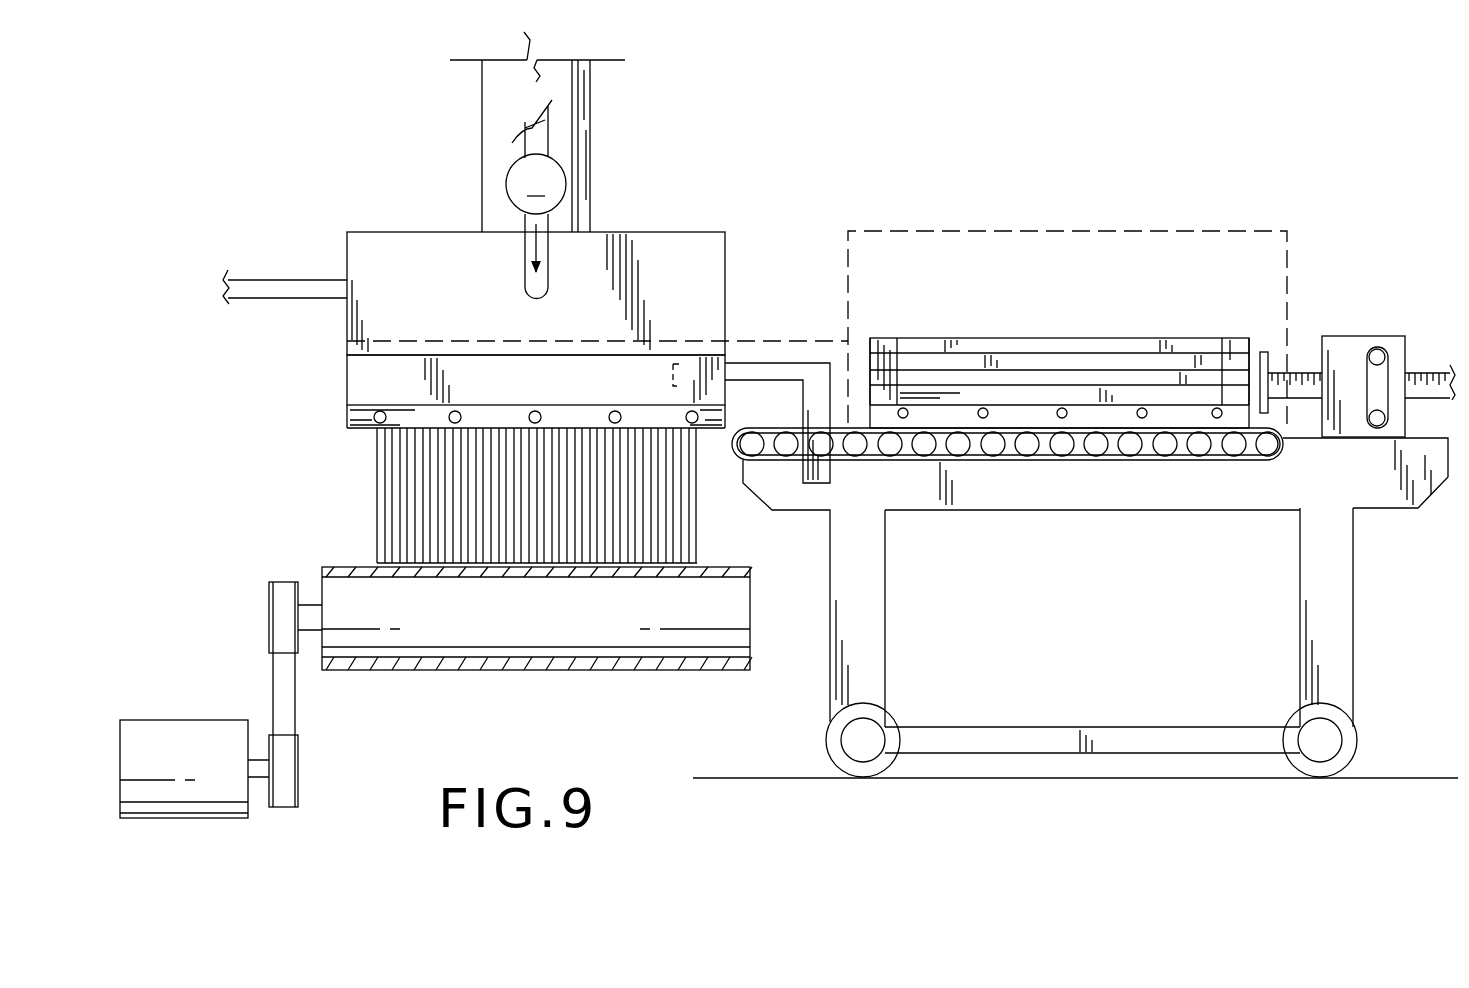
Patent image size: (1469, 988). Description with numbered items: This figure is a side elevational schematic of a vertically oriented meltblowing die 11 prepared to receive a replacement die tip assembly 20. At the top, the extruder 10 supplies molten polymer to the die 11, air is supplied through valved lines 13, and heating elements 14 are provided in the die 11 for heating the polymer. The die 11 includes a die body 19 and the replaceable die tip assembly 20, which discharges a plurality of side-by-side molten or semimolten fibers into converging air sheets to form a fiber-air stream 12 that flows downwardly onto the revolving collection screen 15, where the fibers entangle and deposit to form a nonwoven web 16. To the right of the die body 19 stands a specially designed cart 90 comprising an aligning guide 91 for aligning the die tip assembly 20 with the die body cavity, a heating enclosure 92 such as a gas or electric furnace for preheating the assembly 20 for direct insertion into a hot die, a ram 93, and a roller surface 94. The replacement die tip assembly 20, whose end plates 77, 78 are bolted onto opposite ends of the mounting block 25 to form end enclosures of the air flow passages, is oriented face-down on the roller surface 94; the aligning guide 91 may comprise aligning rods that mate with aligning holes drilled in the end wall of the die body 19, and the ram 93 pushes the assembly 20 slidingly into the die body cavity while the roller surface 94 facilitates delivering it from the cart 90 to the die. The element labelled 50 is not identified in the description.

The extruder 10 is at (590, 107).
The meltblowing die 11 is at (677, 224).
The fiber-air stream 12 is at (377, 466).
The valved lines 13 is at (535, 138).
The heating elements 14 is at (273, 280).
The revolving collection screen 15 is at (339, 560).
The nonwoven web 16 is at (670, 552).
The die body 19 is at (727, 257).
The die tip assembly 20 is at (1122, 336).
The mounting block 25 is at (1030, 383).
The material level 50 is at (413, 308).
The end plate 77 is at (882, 340).
The end plate 78 is at (1235, 340).
The cart 90 is at (1360, 662).
The aligning guide 91 is at (756, 372).
The heating enclosure 92 is at (962, 226).
The ram 93 is at (1340, 333).
The roller surface 94 is at (1006, 464).